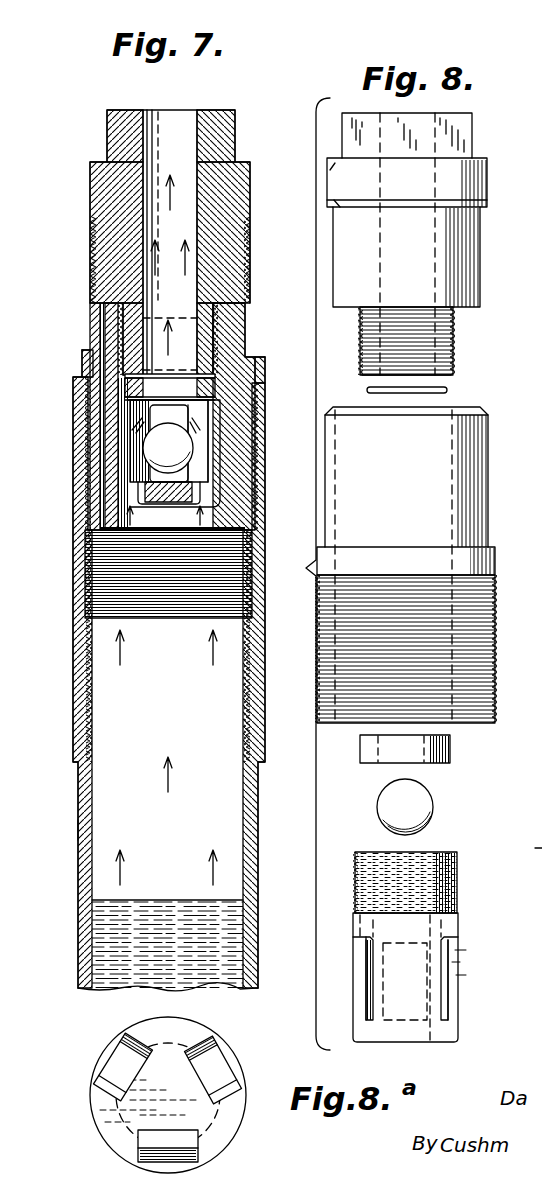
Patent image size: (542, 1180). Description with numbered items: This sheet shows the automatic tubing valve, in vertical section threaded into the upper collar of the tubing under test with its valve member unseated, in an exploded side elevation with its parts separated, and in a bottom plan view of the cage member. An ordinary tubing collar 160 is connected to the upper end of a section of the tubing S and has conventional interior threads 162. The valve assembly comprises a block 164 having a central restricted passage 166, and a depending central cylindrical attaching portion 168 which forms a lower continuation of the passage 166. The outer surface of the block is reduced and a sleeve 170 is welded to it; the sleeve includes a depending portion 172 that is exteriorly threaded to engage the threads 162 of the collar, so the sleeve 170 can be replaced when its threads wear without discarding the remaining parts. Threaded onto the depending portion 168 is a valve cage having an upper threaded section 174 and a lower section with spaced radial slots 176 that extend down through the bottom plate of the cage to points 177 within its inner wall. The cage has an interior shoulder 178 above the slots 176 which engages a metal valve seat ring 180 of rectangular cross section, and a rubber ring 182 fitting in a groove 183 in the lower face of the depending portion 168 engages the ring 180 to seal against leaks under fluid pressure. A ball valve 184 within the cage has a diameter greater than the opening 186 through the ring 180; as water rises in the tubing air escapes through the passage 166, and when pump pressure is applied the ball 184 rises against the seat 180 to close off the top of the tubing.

In FIG. 7, the tubing collar 160 is at (74, 666).
In FIG. 7, the interior threads 162 is at (88, 420).
In FIG. 7, the block 164 is at (237, 186).
In FIG. 8, the block 164 is at (460, 176).
In FIG. 7, the central restricted passage 166 is at (162, 142).
In FIG. 7, the depending central cylindrical attaching portion 168 is at (216, 332).
In FIG. 8, the depending central cylindrical attaching portion 168 is at (452, 334).
In FIG. 7, the sleeve 170 is at (247, 306).
In FIG. 8, the sleeve 170 is at (462, 506).
In FIG. 7, the depending portion 172 is at (85, 469).
In FIG. 7, the upper threaded section 174 is at (222, 354).
In FIG. 8, the upper threaded section 174 is at (350, 852).
In FIG. 7, the radial slots 176 is at (130, 441).
In FIG. 8, the radial slots 176 is at (452, 966).
In FIG. 8A, the radial slots 176 is at (178, 1148).
In FIG. 7, the points 177 is at (136, 486).
In FIG. 8A, the points 177 is at (135, 1080).
In FIG. 7, the interior shoulder 178 is at (214, 412).
In FIG. 7, the valve seat ring 180 is at (132, 387).
In FIG. 8, the valve seat ring 180 is at (451, 752).
In FIG. 7, the rubber ring 182 is at (126, 376).
In FIG. 8, the rubber ring 182 is at (448, 391).
In FIG. 8, the groove 183 is at (442, 380).
In FIG. 7, the ball valve 184 is at (200, 497).
In FIG. 8, the ball valve 184 is at (425, 802).
In FIG. 7, the opening 186 is at (192, 406).
In FIG. 7, the tubing S is at (78, 829).
In FIG. 8, the tubing S is at (541, 845).